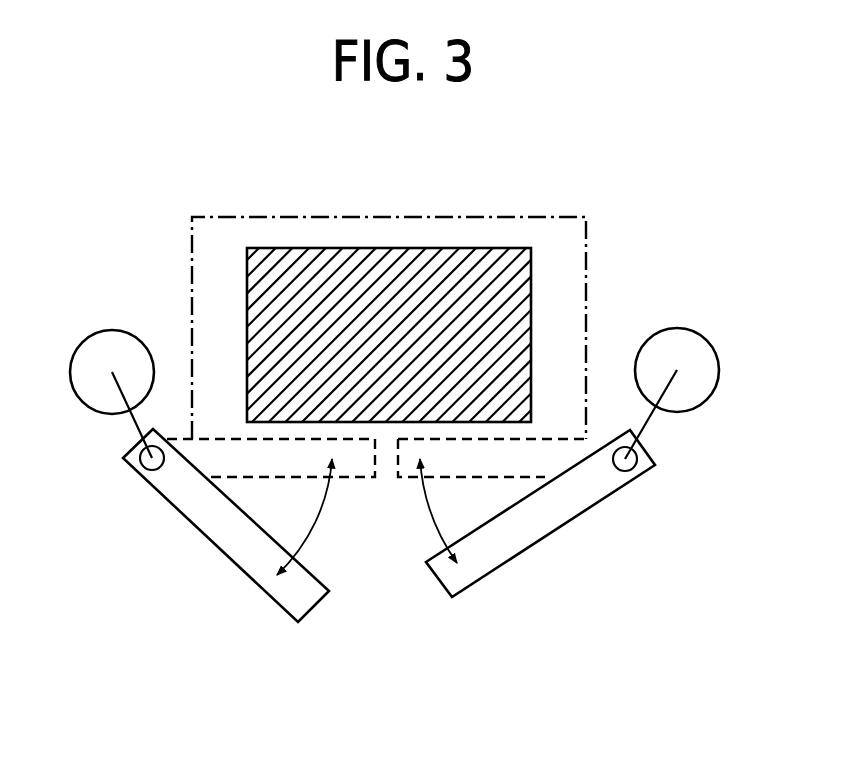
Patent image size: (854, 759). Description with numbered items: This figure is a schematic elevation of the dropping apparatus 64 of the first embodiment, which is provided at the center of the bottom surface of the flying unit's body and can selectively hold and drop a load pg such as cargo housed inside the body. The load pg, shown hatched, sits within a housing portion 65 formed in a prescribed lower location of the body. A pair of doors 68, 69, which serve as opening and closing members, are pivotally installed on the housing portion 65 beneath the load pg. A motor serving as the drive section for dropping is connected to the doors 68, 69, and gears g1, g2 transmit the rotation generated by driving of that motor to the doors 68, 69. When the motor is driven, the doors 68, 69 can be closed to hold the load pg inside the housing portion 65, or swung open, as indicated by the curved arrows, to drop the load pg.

The dropping apparatus 64 is at (380, 552).
The housing portion 65 is at (572, 242).
The door 68 is at (190, 510).
The door 69 is at (553, 515).
The load pg is at (463, 263).
The gear g1 is at (113, 340).
The gear g2 is at (680, 343).